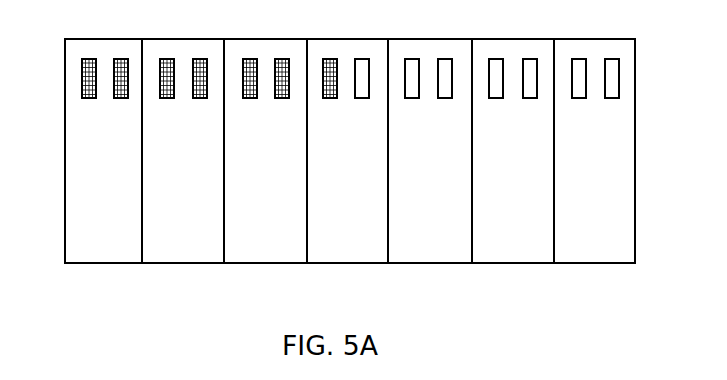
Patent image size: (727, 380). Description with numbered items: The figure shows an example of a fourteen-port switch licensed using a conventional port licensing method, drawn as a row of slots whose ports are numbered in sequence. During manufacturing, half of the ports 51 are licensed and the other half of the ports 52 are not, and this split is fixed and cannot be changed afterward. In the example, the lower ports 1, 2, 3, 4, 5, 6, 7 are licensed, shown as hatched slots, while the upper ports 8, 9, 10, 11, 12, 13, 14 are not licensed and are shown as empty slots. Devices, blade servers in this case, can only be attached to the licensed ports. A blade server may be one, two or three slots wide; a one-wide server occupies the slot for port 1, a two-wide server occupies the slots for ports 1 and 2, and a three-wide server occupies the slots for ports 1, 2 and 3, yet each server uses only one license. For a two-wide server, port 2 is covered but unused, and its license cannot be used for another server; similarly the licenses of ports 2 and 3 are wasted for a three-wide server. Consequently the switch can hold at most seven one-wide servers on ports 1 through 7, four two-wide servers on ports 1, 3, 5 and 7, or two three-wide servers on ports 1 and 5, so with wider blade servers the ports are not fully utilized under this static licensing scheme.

The port 1 is at (89, 57).
The port 2 is at (121, 57).
The port 3 is at (167, 57).
The port 4 is at (200, 57).
The port 5 is at (250, 57).
The port 6 is at (282, 57).
The port 7 is at (330, 57).
The port 8 is at (362, 57).
The port 9 is at (412, 57).
The port 10 is at (444, 57).
The port 11 is at (495, 57).
The port 12 is at (529, 57).
The port 13 is at (578, 57).
The port 14 is at (611, 57).
The licensed ports 51 is at (64, 60).
The unlicensed ports 52 is at (635, 60).